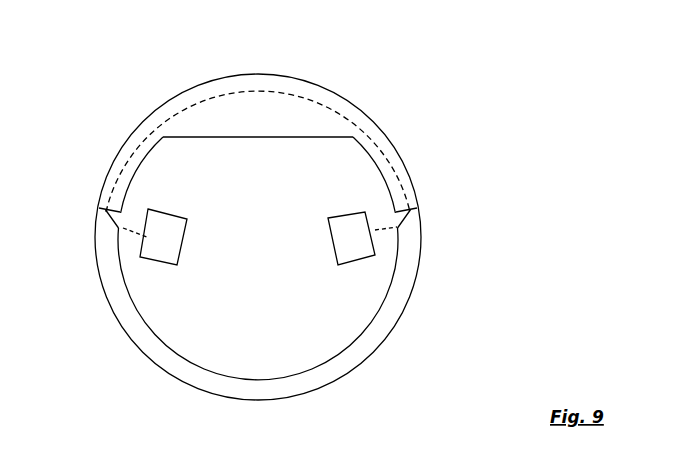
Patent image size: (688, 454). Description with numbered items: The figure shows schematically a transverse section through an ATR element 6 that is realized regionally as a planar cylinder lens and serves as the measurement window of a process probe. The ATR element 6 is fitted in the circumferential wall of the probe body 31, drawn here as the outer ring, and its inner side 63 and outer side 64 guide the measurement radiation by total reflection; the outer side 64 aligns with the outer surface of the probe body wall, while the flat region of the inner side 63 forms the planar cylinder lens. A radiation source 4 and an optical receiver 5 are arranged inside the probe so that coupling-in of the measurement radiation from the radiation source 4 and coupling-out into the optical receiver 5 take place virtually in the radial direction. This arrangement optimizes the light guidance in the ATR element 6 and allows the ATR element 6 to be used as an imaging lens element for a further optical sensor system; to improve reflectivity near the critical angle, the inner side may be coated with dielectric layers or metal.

The radiation source 4 is at (146, 242).
The optical receiver 5 is at (360, 245).
The ATR element 6 is at (313, 102).
The circumferential wall of the probe body 31 is at (122, 300).
The inner side 63 is at (247, 137).
The outer side 64 is at (260, 76).